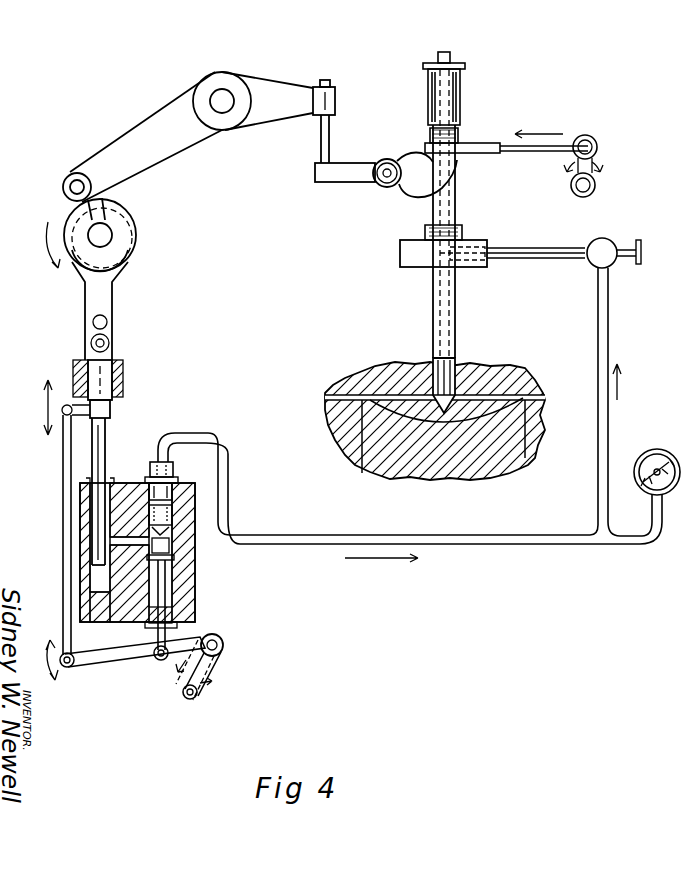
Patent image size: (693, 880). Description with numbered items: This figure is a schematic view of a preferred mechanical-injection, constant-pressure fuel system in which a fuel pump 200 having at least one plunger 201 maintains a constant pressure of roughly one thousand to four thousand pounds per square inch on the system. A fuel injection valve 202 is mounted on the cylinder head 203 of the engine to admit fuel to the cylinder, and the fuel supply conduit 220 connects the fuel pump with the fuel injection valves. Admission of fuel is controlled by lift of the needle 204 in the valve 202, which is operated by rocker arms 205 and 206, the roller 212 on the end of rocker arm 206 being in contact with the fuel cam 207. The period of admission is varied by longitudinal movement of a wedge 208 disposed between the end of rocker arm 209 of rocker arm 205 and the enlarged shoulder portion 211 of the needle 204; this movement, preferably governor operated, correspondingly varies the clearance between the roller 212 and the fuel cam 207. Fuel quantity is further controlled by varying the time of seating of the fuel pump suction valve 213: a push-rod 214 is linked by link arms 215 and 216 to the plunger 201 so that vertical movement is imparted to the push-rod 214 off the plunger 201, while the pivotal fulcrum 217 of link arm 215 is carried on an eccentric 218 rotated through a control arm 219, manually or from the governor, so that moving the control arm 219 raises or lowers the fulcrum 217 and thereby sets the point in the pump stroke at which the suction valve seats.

The fuel pump 200 is at (130, 487).
The plunger 201 is at (104, 436).
The fuel injection valve 202 is at (453, 347).
The cylinder head 203 is at (337, 420).
The needle 204 is at (450, 302).
The rocker arm 205 is at (352, 180).
The rocker arm 206 is at (191, 147).
The fuel cam 207 is at (137, 233).
The wedge 208 is at (480, 145).
The end of rocker arm 209 is at (457, 176).
The enlarged shoulder portion 211 is at (432, 140).
The roller 212 is at (70, 176).
The fuel pump suction valve 213 is at (168, 568).
The push-rod 214 is at (166, 640).
The link arm 215 is at (122, 658).
The link arm 216 is at (66, 470).
The pivotal fulcrum 217 is at (222, 650).
The eccentric 218 is at (222, 665).
The control arm 219 is at (202, 679).
The fuel supply conduit 220 is at (420, 540).